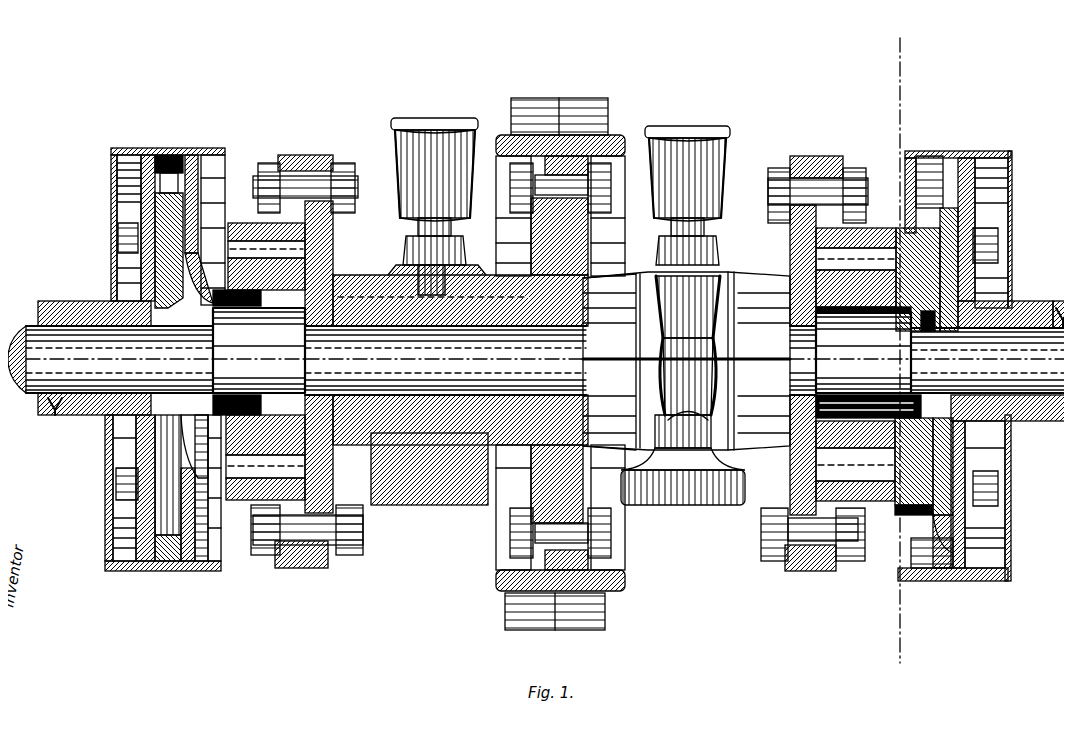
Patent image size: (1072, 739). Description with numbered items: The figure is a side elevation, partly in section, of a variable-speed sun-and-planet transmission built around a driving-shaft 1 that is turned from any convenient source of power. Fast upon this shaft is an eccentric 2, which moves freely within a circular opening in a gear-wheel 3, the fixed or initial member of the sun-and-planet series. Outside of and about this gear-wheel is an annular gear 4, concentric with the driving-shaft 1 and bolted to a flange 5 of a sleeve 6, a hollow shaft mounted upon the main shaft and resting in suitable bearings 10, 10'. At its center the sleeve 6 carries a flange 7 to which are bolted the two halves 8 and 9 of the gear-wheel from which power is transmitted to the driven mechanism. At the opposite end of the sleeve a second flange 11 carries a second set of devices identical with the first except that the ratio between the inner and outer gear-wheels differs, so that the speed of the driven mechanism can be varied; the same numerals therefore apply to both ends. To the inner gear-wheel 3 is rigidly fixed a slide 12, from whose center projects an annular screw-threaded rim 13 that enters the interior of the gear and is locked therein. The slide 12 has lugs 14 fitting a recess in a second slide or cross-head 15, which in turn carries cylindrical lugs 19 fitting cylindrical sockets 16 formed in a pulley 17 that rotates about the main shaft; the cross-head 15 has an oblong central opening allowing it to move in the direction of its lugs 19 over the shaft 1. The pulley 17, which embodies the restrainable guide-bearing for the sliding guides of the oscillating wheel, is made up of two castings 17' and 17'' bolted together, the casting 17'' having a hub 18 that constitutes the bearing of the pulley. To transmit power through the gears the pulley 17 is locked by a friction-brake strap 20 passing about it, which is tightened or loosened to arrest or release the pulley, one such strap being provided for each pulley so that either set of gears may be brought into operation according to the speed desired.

The driving-shaft 1 is at (536, 359).
The eccentric 2 is at (562, 350).
The gear-wheel 3 is at (328, 250).
The annular gear 4 is at (238, 485).
The flange 5 is at (800, 148).
The sleeve 6 is at (362, 268).
The flange 7 is at (590, 238).
The gear-wheel half 8 is at (612, 128).
The gear-wheel half 9 is at (497, 127).
The bearings 10 is at (683, 332).
The lower block 10' is at (429, 485).
The second flange 11 is at (318, 147).
The slide 12 is at (205, 262).
The annular screw-threaded rim 13 is at (238, 310).
The lugs 14 is at (890, 217).
The cross-head 15 is at (100, 412).
The cylindrical sockets 16 is at (180, 140).
The pulley 17 is at (561, 348).
The casting 17' is at (521, 488).
The casting 17'' is at (591, 484).
The hub 18 is at (78, 293).
The cylindrical lugs 19 is at (105, 197).
The strap 20 is at (180, 565).